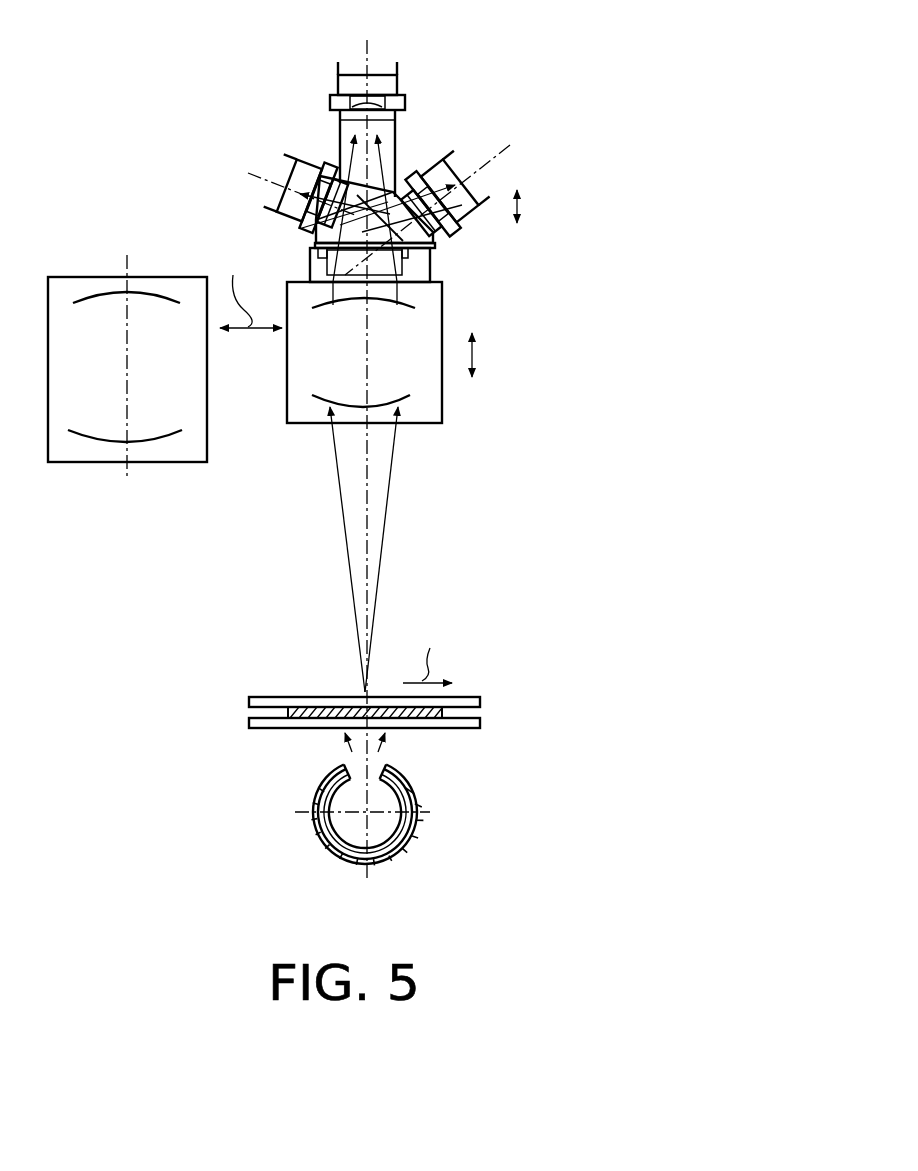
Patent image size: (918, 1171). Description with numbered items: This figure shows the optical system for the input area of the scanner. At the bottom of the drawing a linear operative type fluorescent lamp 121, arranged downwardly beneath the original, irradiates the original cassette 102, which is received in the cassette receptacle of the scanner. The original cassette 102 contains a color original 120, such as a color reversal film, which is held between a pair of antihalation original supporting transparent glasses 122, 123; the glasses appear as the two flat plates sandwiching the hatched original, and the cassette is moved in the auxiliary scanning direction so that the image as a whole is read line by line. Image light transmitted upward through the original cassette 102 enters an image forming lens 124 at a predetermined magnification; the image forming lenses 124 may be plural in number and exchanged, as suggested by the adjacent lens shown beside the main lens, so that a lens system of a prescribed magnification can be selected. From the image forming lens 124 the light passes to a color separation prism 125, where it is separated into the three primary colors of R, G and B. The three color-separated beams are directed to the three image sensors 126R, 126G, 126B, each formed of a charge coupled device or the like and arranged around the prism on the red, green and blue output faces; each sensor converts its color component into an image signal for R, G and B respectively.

The original cassette 102 is at (366, 696).
The color original 120 is at (337, 702).
The fluorescent lamp 121 is at (400, 848).
The antihalation original supporting transparent glass 122 is at (473, 698).
The antihalation original supporting transparent glass 123 is at (463, 729).
The image forming lens 124 is at (456, 405).
The color separation prism 125 is at (405, 150).
The image sensor 126G is at (379, 74).
The image sensor 126R is at (278, 203).
The image sensor 126B is at (510, 243).